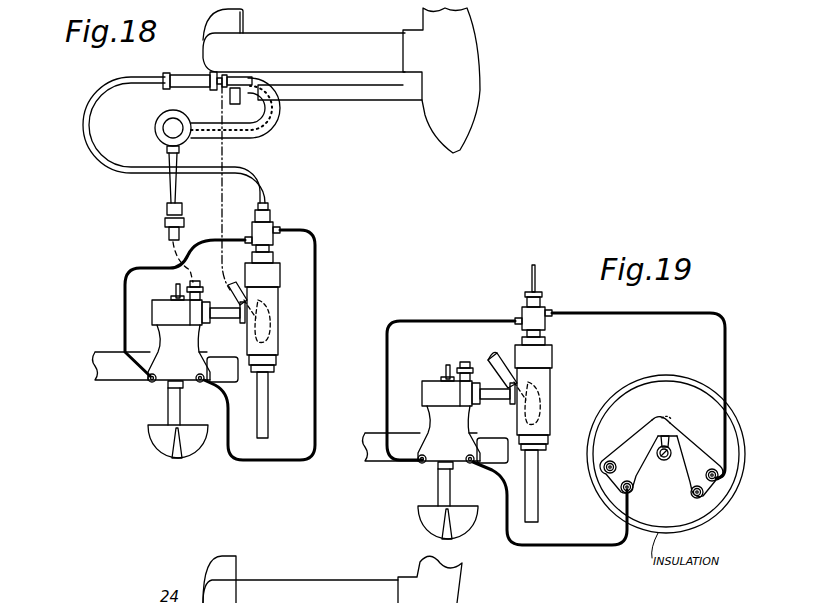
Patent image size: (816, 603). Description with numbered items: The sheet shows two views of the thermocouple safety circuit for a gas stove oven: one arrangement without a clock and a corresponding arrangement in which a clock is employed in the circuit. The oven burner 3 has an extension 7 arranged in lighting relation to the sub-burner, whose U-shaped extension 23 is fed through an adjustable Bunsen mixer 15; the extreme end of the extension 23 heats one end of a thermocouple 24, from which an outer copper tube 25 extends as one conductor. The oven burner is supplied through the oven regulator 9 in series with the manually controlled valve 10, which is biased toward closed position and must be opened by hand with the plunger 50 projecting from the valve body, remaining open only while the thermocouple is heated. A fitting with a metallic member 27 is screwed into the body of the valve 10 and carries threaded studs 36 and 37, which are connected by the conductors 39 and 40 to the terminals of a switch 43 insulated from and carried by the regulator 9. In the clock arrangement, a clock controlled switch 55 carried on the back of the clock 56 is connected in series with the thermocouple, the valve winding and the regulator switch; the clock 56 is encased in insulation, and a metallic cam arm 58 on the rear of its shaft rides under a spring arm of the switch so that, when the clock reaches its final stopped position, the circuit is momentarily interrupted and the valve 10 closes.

In FIG. 18, the oven burner 3 is at (445, 142).
In FIG. 18, the extension 7 is at (345, 100).
In FIG. 18, the oven regulator 9 is at (158, 402).
In FIG. 19, the oven regulator 9 is at (430, 472).
In FIG. 18, the manually controlled valve 10 is at (280, 275).
In FIG. 19, the manually controlled valve 10 is at (553, 360).
In FIG. 18, the adjustable Bunsen mixer 15 is at (165, 204).
In FIG. 18, the U-shaped extension 23 is at (270, 120).
In FIG. 18, the thermocouple 24 is at (186, 75).
In FIG. 18, the outer copper tube 25 is at (84, 139).
In FIG. 18, the metallic member 27 is at (270, 212).
In FIG. 19, the metallic member 27 is at (522, 318).
In FIG. 18, the threaded stud 36 is at (281, 229).
In FIG. 18, the threaded stud 37 is at (246, 238).
In FIG. 18, the conductor 39 is at (318, 330).
In FIG. 18, the conductor 40 is at (125, 302).
In FIG. 18, the switch 43 is at (167, 388).
In FIG. 19, the switch 43 is at (463, 468).
In FIG. 18, the plunger 50 is at (268, 408).
In FIG. 19, the plunger 50 is at (538, 498).
In FIG. 19, the clock controlled switch 55 is at (672, 418).
In FIG. 19, the clock 56 is at (643, 378).
In FIG. 19, the cam arm 58 is at (670, 445).